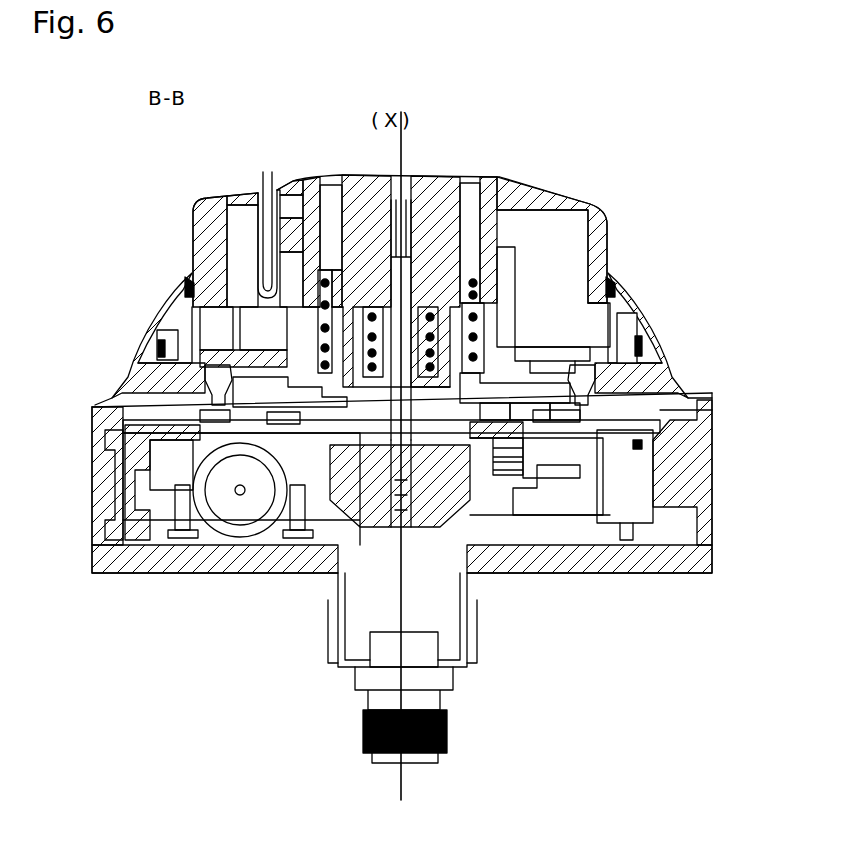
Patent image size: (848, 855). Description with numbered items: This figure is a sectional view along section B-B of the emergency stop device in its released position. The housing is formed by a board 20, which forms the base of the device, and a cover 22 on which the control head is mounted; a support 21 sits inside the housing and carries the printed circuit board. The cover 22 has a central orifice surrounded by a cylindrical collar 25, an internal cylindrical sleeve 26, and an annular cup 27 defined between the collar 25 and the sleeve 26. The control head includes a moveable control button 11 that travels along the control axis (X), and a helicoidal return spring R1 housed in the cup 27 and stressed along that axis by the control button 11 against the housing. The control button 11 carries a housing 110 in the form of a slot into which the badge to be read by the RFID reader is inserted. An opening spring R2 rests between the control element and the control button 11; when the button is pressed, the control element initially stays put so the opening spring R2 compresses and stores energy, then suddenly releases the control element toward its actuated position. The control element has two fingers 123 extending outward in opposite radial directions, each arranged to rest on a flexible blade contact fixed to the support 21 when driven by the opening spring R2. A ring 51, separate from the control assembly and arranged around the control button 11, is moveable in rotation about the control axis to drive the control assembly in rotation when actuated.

The control button 11 is at (546, 195).
The housing 110 is at (266, 185).
The opening spring R2 is at (430, 305).
The return spring R1 is at (323, 328).
The cylindrical collar 25 is at (482, 352).
The internal cylindrical sleeve 26 is at (507, 262).
The annular cup 27 is at (545, 340).
The ring 51 is at (178, 304).
The cover 22 is at (115, 402).
The board 20 is at (125, 567).
The support 21 is at (130, 465).
The finger 123 is at (503, 435).